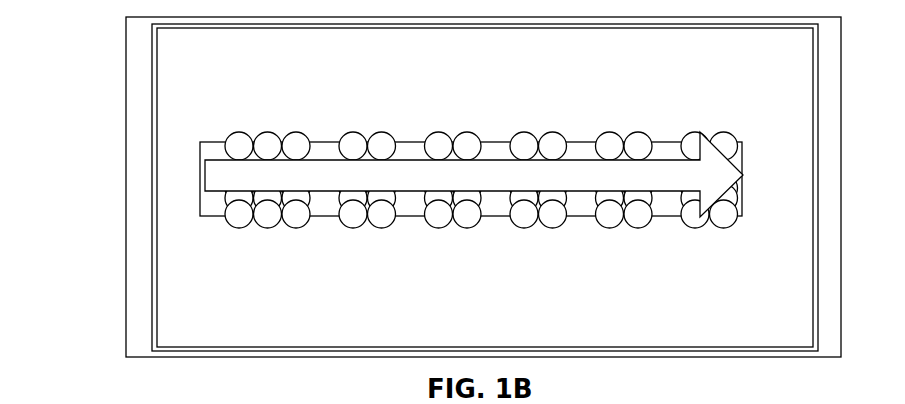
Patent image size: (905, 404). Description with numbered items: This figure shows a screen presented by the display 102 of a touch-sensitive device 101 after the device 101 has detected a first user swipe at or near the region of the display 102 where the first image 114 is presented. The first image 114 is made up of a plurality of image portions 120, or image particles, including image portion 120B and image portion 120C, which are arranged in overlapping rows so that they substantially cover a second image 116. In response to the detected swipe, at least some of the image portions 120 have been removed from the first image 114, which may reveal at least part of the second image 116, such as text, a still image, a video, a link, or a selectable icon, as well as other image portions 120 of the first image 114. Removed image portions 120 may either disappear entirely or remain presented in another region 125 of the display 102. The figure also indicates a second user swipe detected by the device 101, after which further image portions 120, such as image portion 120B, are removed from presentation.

The touch-sensitive device 101 is at (128, 125).
The display 102 is at (153, 297).
The first image 114 is at (361, 129).
The second image 116 is at (205, 215).
The image portions 120 is at (484, 98).
The image portion 120B is at (237, 130).
The image portion 120C is at (269, 130).
The region 125 is at (730, 313).